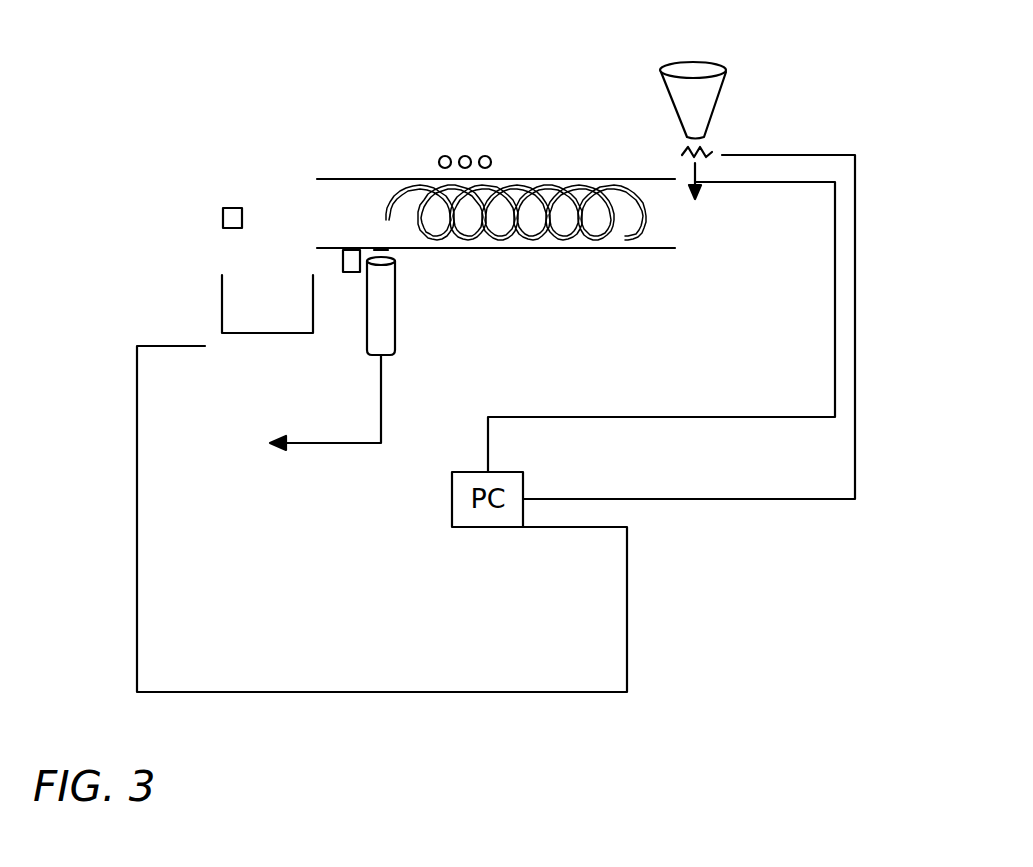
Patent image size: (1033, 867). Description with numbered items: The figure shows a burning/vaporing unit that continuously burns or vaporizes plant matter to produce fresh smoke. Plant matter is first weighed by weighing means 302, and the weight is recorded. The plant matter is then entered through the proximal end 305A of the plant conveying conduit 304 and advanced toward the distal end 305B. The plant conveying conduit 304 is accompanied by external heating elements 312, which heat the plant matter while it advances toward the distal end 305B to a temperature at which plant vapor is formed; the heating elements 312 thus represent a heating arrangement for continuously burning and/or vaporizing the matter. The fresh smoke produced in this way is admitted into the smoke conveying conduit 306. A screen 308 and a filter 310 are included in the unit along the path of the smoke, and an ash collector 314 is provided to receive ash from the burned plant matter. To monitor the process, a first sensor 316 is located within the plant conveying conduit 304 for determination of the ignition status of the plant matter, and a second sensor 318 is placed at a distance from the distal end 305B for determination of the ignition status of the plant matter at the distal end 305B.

The weighing means 302 is at (693, 61).
The plant conveying conduit 304 is at (543, 178).
The proximal end 305A is at (663, 228).
The distal end 305B is at (323, 210).
The smoke conveying conduit 306 is at (395, 337).
The screen 308 is at (395, 265).
The filter 310 is at (380, 257).
The heating elements 312 is at (443, 155).
The ash collector 314 is at (260, 303).
The first sensor 316 is at (352, 273).
The second sensor 318 is at (229, 208).